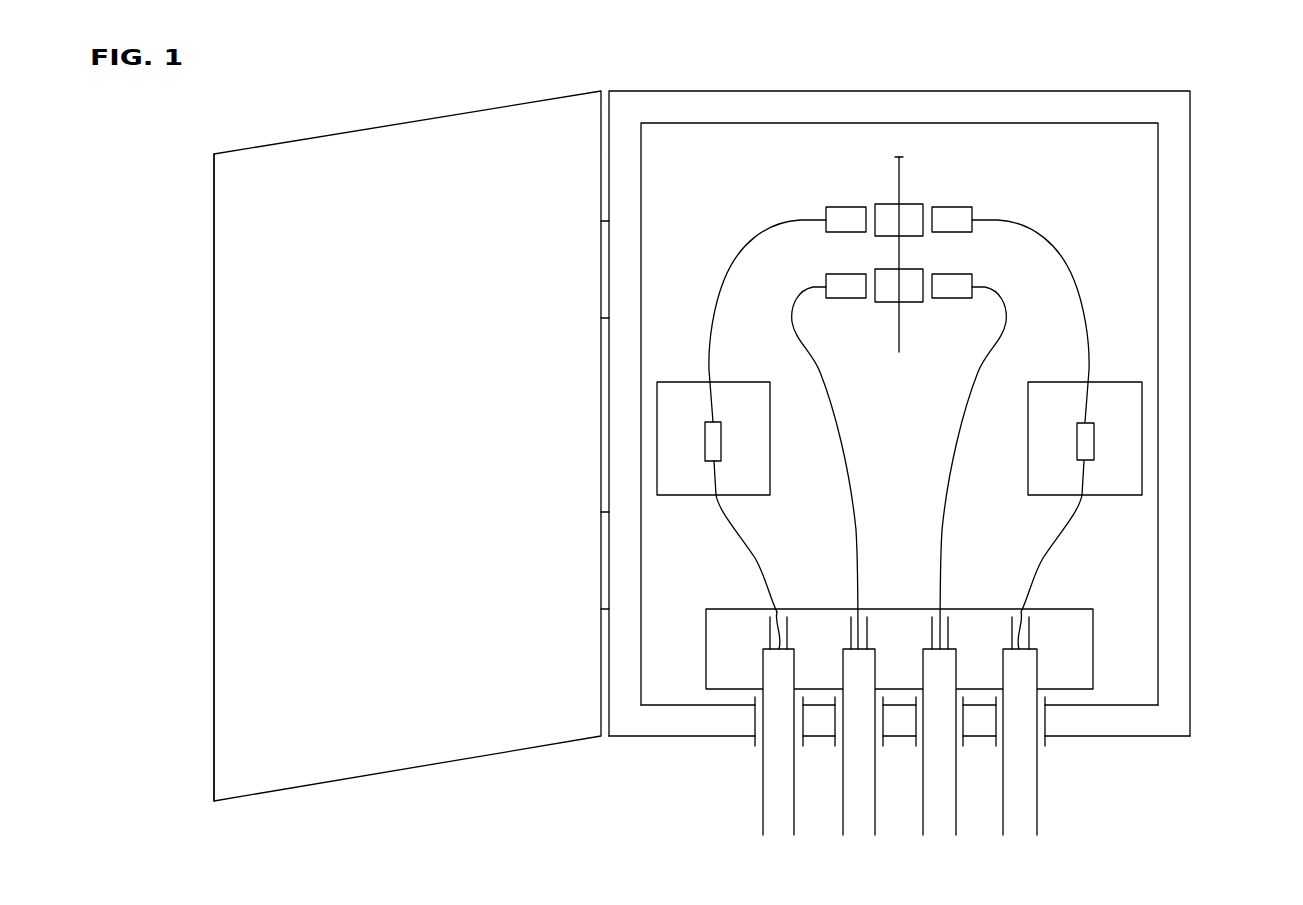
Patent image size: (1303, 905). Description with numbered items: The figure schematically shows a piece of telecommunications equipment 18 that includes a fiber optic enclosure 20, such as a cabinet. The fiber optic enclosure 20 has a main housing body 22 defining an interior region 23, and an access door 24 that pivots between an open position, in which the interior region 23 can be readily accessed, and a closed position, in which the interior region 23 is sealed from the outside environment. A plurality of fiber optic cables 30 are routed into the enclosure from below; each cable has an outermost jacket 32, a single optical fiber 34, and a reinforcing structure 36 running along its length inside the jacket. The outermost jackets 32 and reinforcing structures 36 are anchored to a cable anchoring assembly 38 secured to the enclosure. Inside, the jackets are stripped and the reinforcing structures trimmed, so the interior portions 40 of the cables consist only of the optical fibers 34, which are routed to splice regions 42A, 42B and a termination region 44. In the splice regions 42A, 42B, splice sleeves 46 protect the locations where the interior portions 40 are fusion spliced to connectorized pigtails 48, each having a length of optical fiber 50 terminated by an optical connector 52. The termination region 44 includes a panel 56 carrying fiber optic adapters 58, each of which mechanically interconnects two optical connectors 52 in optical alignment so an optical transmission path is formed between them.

The piece of telecommunications equipment 18 is at (428, 110).
The fiber optic enclosure 20 is at (1192, 297).
The main housing body 22 is at (1192, 445).
The interior region 23 is at (1132, 565).
The access door 24 is at (230, 359).
The fiber optic cables 30 is at (858, 754).
The outermost jacket 32 is at (780, 815).
The optical fiber 34 is at (760, 569).
The reinforcing structure 36 is at (787, 629).
The cable anchoring assembly 38 is at (1097, 672).
The interior portions 40 is at (765, 595).
The splice region 42A is at (1145, 477).
The splice region 42B is at (655, 455).
The termination region 44 is at (894, 165).
The splice sleeves 46 is at (722, 440).
The connectorized pigtails 48 is at (886, 428).
The length of optical fiber 50 is at (708, 362).
The optical connector 52 is at (847, 232).
The panel 56 is at (900, 168).
The fiber optic adapters 58 is at (910, 205).